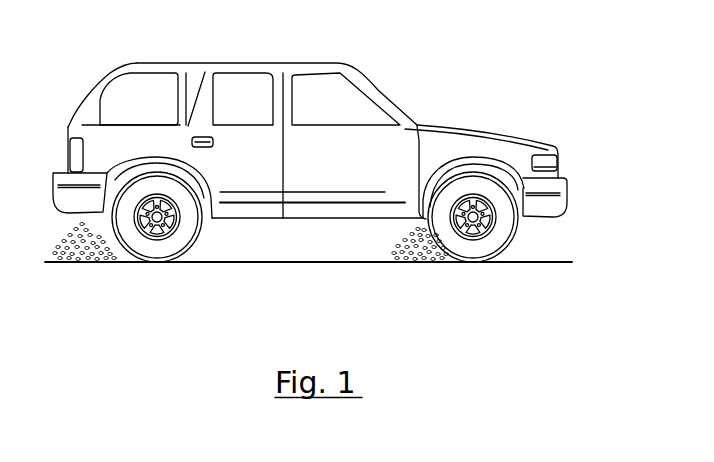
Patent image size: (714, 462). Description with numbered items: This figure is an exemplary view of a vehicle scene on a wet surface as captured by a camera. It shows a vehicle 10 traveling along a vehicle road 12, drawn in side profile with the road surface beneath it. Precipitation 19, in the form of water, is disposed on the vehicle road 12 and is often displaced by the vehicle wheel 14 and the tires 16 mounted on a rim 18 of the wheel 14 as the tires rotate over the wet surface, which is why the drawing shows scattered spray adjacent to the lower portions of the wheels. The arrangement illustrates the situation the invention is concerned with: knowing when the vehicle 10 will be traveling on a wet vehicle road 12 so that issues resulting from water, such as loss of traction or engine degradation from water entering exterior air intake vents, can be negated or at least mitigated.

The vehicle 10 is at (394, 91).
The vehicle road 12 is at (202, 263).
The vehicle wheel 14 is at (477, 261).
The tires 16 is at (500, 242).
The rim 18 is at (493, 216).
The precipitation 19 is at (420, 257).